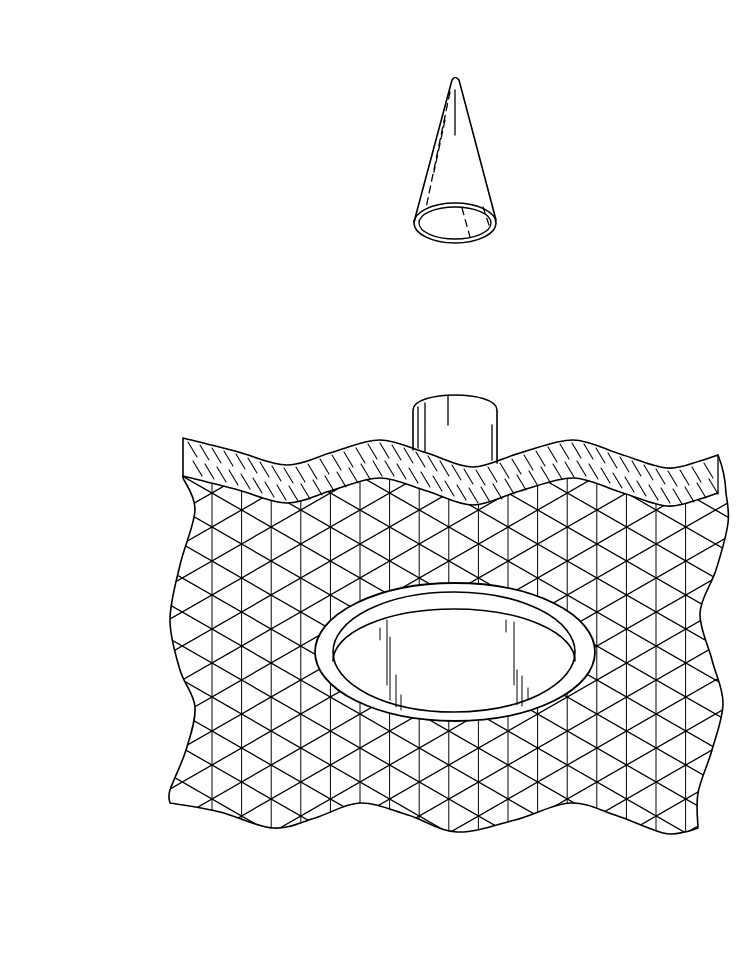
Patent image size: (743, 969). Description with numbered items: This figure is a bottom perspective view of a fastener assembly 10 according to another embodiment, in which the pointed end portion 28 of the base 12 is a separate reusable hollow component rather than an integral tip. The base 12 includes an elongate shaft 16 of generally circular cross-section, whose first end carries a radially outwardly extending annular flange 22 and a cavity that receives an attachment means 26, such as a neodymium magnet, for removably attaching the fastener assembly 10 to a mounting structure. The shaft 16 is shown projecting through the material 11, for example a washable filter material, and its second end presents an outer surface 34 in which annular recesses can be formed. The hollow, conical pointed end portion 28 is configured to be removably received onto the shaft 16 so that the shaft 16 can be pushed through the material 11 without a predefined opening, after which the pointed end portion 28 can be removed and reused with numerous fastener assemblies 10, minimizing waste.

The fastener assembly 10 is at (216, 78).
The material 11 is at (210, 783).
The base 12 is at (452, 413).
The shaft 16 is at (412, 432).
The annular flange 22 is at (325, 660).
The attachment means 26 is at (466, 707).
The pointed end portion 28 is at (510, 75).
The outer surface 34 is at (498, 413).